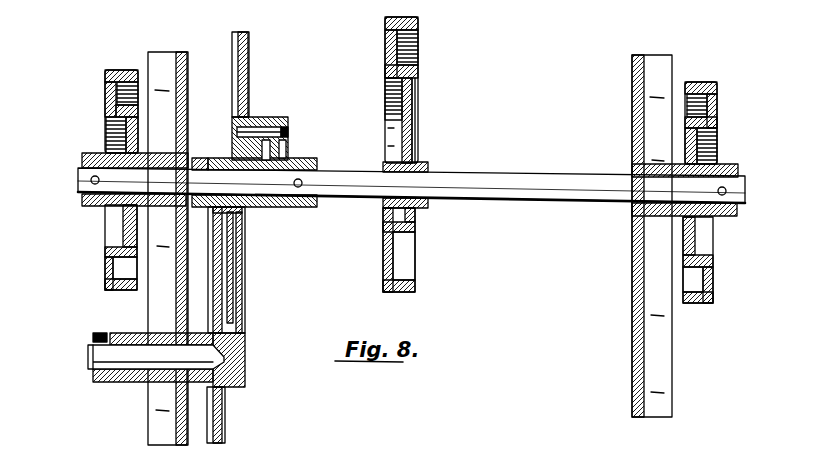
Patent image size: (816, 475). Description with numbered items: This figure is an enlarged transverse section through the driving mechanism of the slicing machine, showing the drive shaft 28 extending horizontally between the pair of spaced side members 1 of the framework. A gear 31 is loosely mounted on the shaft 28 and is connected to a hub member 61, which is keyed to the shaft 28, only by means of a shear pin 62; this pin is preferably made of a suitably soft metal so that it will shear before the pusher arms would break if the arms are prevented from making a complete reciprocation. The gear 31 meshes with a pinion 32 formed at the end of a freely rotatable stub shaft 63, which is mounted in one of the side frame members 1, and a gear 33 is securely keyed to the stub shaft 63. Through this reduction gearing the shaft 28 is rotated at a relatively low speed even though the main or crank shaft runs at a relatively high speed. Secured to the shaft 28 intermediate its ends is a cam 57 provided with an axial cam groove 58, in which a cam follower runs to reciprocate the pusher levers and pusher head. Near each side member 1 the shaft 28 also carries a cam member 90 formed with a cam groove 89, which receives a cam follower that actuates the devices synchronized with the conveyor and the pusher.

The side members 1 is at (152, 426).
The drive shaft 28 is at (488, 180).
The gear 31 is at (250, 40).
The pinion 32 is at (242, 380).
The gear 33 is at (229, 425).
The cam 57 is at (387, 40).
The cam groove 58 is at (408, 272).
The hub member 61 is at (307, 160).
The shear pin 62 is at (287, 133).
The stub shaft 63 is at (88, 360).
The cam groove 89 is at (133, 280).
The cam member 90 is at (107, 107).